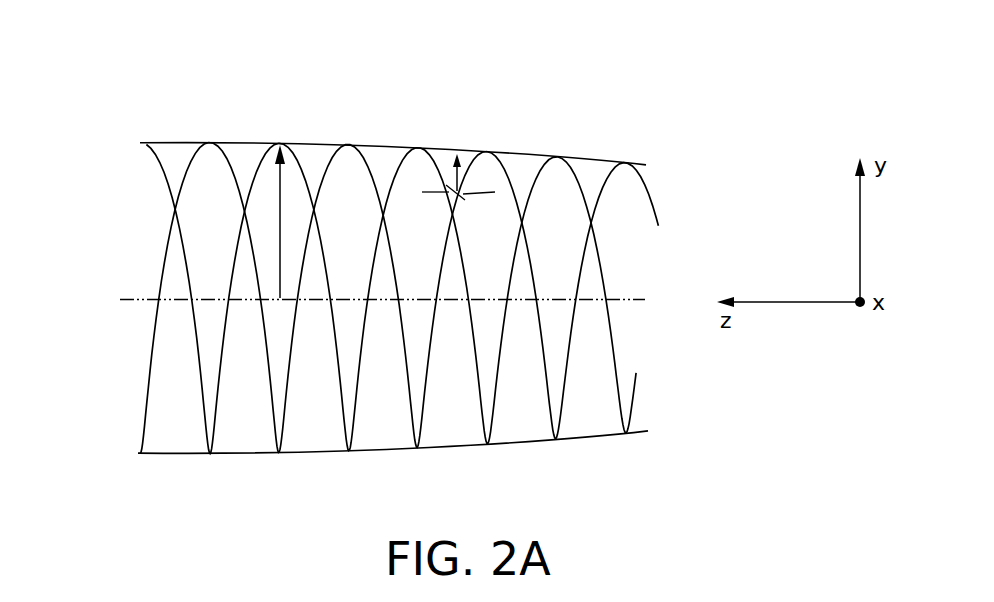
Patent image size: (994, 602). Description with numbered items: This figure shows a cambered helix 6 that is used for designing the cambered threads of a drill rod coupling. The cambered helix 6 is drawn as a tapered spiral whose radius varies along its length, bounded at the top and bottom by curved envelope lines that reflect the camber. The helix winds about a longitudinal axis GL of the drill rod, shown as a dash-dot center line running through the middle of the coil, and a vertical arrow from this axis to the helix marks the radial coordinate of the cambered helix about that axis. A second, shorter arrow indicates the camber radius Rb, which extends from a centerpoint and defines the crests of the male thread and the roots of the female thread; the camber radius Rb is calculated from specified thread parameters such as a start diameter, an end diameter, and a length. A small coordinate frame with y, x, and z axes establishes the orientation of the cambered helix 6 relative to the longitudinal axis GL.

The cambered helix 6 is at (102, 48).
The camber radius Rb is at (458, 180).
The longitudinal axis GL is at (623, 299).